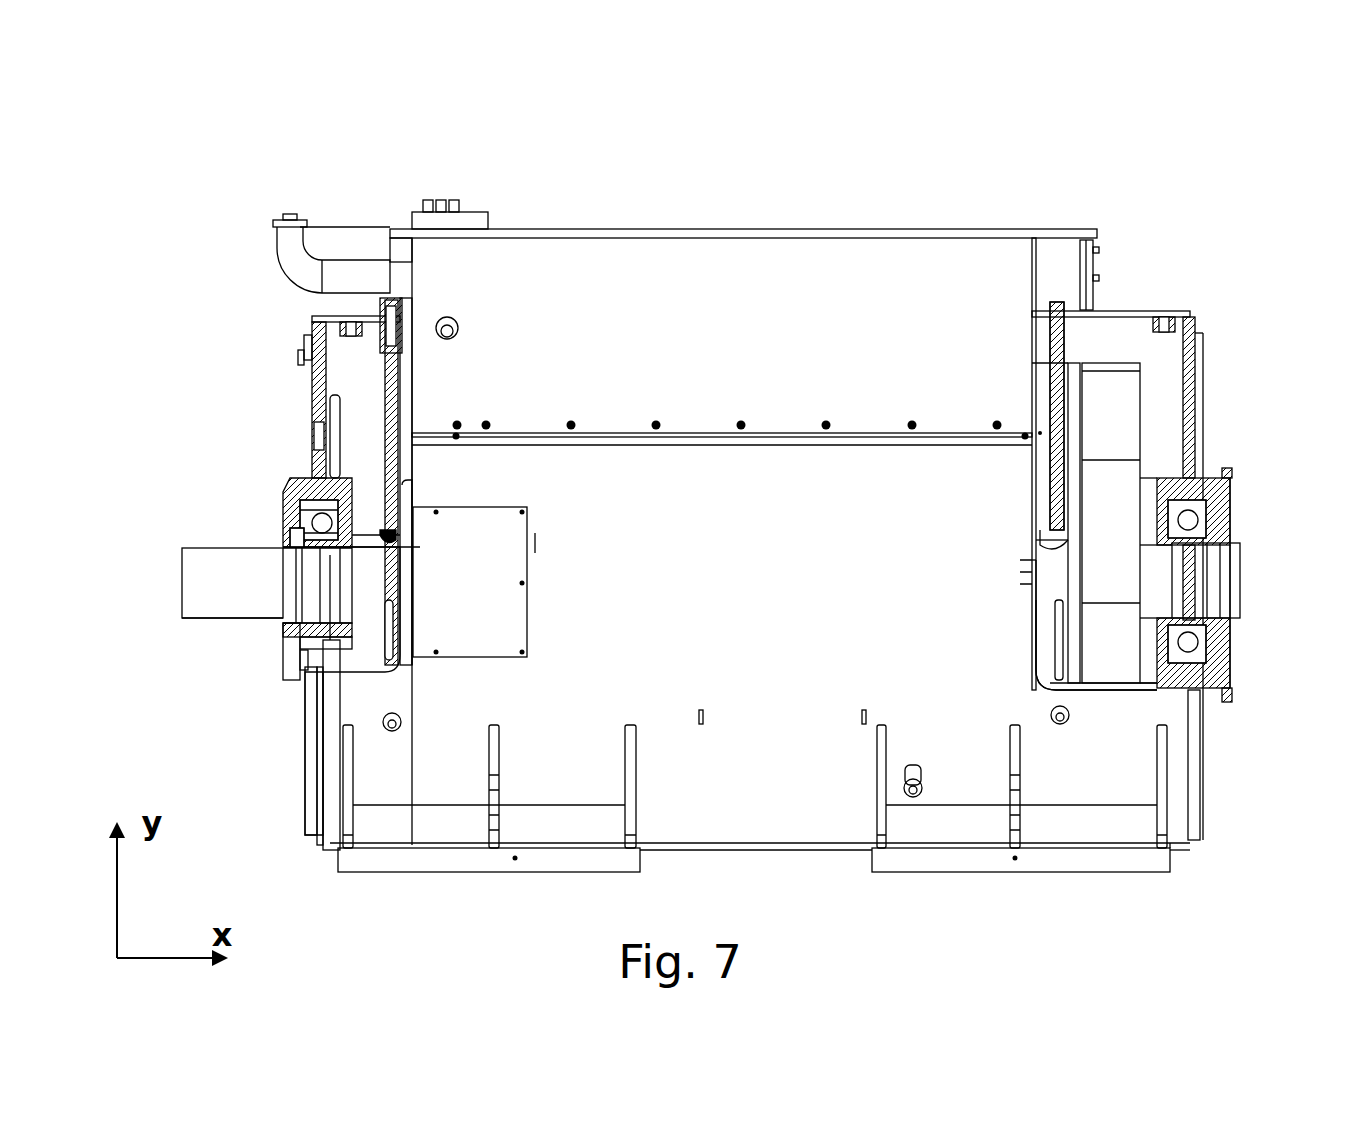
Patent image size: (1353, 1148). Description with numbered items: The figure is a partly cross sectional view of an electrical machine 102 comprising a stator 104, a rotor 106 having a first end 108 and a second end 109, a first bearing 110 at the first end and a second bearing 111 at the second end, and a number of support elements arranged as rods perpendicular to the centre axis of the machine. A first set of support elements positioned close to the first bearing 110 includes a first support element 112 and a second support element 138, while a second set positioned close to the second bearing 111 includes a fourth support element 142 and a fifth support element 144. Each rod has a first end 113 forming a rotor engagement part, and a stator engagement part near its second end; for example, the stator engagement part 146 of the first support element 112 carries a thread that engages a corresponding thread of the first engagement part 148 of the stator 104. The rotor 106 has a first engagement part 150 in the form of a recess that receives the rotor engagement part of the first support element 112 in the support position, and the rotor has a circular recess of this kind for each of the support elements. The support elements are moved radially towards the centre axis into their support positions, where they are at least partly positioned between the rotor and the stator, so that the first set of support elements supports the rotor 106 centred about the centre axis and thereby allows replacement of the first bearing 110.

The electrical machine 102 is at (165, 250).
The stator 104 is at (300, 314).
The rotor 106 is at (222, 600).
The first end 108 is at (183, 568).
The second end 109 is at (1242, 595).
The first bearing 110 is at (290, 490).
The second bearing 111 is at (1222, 478).
The first support element 112 is at (325, 380).
The first end 113 is at (300, 538).
The second support element 138 is at (390, 647).
The fourth support element 142 is at (1063, 302).
The fifth support element 144 is at (1055, 660).
The stator engagement part 146 is at (384, 305).
The first engagement part 148 is at (390, 317).
The first engagement part 150 is at (393, 543).